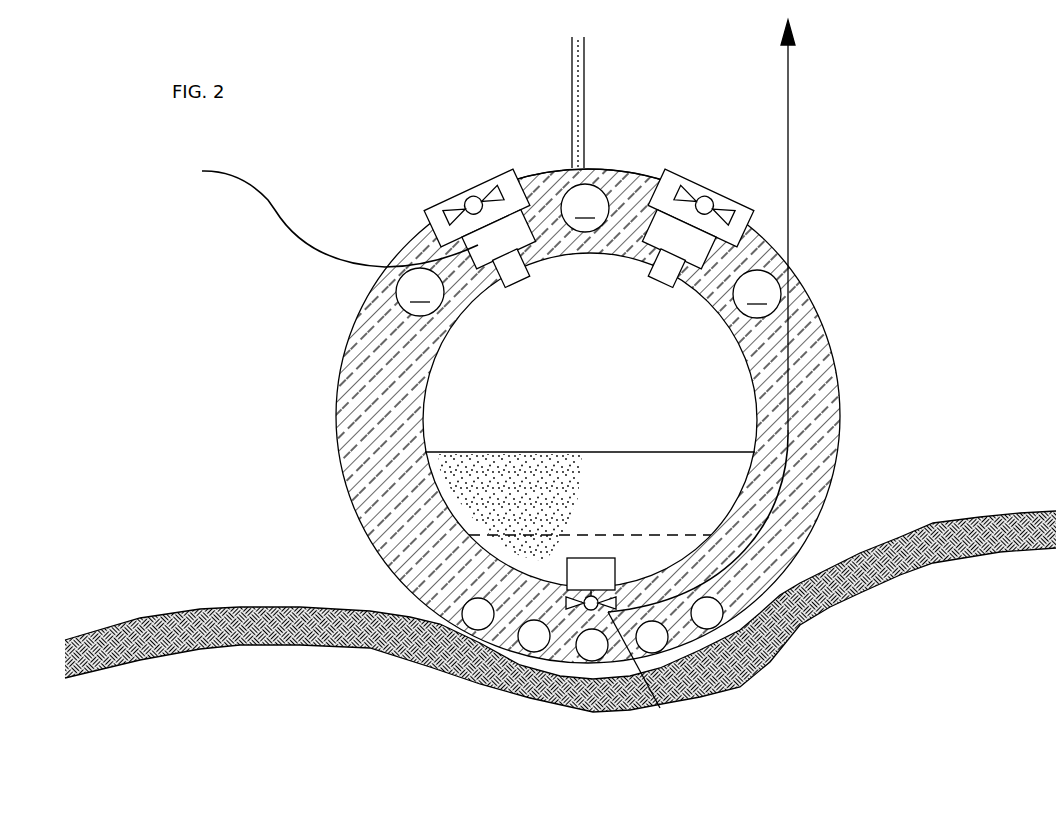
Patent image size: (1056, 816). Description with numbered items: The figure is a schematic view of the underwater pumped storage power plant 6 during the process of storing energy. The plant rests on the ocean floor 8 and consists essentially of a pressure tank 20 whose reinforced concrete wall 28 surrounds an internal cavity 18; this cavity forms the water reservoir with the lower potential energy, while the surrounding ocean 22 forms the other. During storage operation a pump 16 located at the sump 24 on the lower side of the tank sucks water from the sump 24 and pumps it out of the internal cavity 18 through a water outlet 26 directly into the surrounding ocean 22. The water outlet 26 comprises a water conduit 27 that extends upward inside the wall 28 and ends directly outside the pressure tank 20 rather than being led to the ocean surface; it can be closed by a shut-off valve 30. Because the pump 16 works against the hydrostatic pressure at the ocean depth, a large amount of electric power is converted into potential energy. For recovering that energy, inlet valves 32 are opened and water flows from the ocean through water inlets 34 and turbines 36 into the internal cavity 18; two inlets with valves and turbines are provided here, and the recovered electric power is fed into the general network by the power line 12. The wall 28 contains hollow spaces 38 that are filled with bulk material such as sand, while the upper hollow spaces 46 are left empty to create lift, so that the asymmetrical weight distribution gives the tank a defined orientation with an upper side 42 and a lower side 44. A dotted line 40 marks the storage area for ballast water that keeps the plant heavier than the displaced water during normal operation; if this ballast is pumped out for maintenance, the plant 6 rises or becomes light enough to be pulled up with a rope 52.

The pumped storage power plant 6 is at (844, 363).
The ocean floor 8 is at (976, 512).
The power line 12 is at (308, 252).
The pump 16 is at (588, 578).
The internal cavity 18 is at (579, 414).
The pressure tank 20 is at (844, 440).
The surrounding ocean 22 is at (196, 283).
The sump 24 is at (543, 555).
The water outlet 26 is at (792, 204).
The water conduit 27 is at (796, 304).
The reinforced concrete wall 28 is at (798, 514).
The shut-off valve 30 is at (644, 672).
The inlet valve 32 is at (452, 203).
The water inlet 34 is at (498, 167).
The turbine 36 is at (522, 242).
The hollow spaces 38 is at (470, 620).
The dotted line 40 is at (656, 531).
The upper side 42 is at (609, 166).
The lower side 44 is at (572, 690).
The upper hollow spaces 46 is at (588, 251).
The rope 52 is at (580, 99).